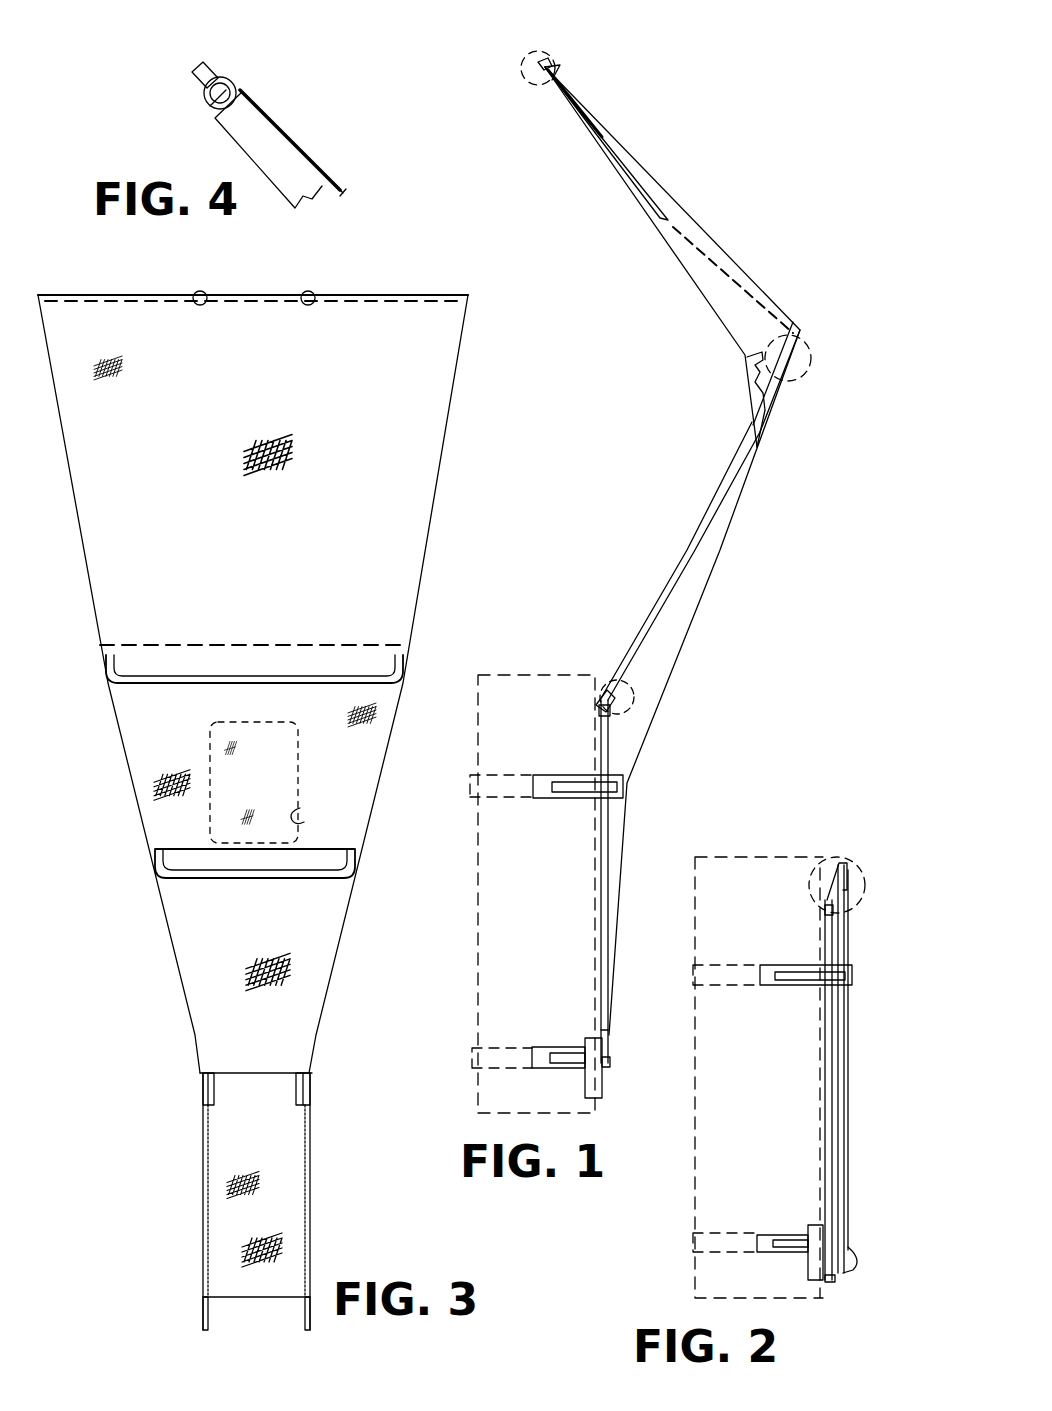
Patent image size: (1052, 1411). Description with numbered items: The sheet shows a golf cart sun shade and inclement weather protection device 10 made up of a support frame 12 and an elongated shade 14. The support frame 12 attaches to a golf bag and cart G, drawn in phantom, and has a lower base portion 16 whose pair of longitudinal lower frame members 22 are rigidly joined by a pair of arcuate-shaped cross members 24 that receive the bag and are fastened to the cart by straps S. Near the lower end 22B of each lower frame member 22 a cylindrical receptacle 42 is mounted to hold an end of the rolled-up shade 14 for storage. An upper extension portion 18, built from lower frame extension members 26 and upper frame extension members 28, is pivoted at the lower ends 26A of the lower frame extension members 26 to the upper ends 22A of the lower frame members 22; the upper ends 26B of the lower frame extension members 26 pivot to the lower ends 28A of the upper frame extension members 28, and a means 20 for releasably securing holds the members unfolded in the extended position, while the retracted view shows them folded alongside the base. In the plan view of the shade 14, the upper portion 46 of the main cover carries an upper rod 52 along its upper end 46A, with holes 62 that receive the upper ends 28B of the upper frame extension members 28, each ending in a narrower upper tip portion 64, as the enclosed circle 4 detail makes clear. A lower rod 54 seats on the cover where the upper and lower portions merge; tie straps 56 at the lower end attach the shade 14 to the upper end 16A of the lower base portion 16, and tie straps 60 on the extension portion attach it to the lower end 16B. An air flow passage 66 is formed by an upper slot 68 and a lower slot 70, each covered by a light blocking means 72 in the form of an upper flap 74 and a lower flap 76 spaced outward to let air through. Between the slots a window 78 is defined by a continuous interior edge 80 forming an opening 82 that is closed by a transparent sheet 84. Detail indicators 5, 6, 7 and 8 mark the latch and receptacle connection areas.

In FIG. 1, the golf cart sun shade and inclement weather protection device 10 is at (745, 100).
In FIG. 1, the support frame 12 is at (698, 697).
In FIG. 2, the support frame 12 is at (832, 1079).
In FIG. 3, the elongated shade 14 is at (483, 472).
In FIG. 4, the elongated shade 14 is at (349, 190).
In FIG. 1, the elongated shade 14 is at (660, 517).
In FIG. 1, the lower base portion 16 is at (619, 882).
In FIG. 1, the upper end of lower base portion 16A is at (600, 707).
In FIG. 1, the lower end of lower base portion 16B is at (611, 1054).
In FIG. 1, the upper extension portion 18 is at (685, 528).
In FIG. 2, the upper extension portion 18 is at (838, 1069).
In FIG. 1, the means for releasably securing 20 is at (811, 343).
In FIG. 2, the means for releasably securing 20 is at (855, 867).
In FIG. 1, the lower frame members 22 is at (602, 965).
In FIG. 2, the lower frame members 22 is at (825, 1060).
In FIG. 1, the upper ends of lower frame members 22A is at (609, 720).
In FIG. 2, the upper ends of lower frame members 22A is at (827, 913).
In FIG. 1, the lower end of lower frame member 22B is at (610, 1030).
In FIG. 2, the lower end of lower frame member 22B is at (832, 1282).
In FIG. 1, the arcuate-shaped cross members 24 is at (570, 798).
In FIG. 2, the arcuate-shaped cross members 24 is at (792, 986).
In FIG. 1, the lower frame extension members 26 is at (678, 582).
In FIG. 2, the lower frame extension members 26 is at (844, 1168).
In FIG. 1, the lower ends of lower frame extension members 26A is at (631, 677).
In FIG. 1, the upper ends of lower frame extension members 26B is at (788, 373).
In FIG. 1, the upper frame extension members 28 is at (686, 200).
In FIG. 2, the upper frame extension members 28 is at (836, 1133).
In FIG. 1, the lower ends of upper frame extension members 28A is at (763, 330).
In FIG. 4, the upper ends of upper frame extension members 28B is at (268, 137).
In FIG. 1, the upper ends of upper frame extension members 28B is at (538, 80).
In FIG. 1, the cylindrical receptacles 42 is at (599, 1086).
In FIG. 2, the cylindrical receptacles 42 is at (808, 1265).
In FIG. 4, the upper portion of main cover 46 is at (341, 188).
In FIG. 4, the upper end of upper portion 46A is at (243, 92).
In FIG. 3, the upper rod 52 is at (375, 295).
In FIG. 4, the upper rod 52 is at (210, 109).
In FIG. 3, the lower rod 54 is at (270, 645).
In FIG. 1, the lower rod 54 is at (768, 333).
In FIG. 3, the tie straps 56 is at (201, 1097).
In FIG. 3, the tie straps 60 is at (300, 1315).
In FIG. 3, the holes 62 is at (307, 293).
In FIG. 4, the holes 62 is at (204, 96).
In FIG. 4, the upper tip portion 64 is at (204, 71).
In FIG. 1, the upper tip portion 64 is at (548, 64).
In FIG. 3, the air flow passage 66 is at (382, 690).
In FIG. 3, the upper slot 68 is at (108, 678).
In FIG. 3, the lower slot 70 is at (173, 873).
In FIG. 3, the light blocking means 72 is at (136, 690).
In FIG. 3, the upper flap 74 is at (166, 660).
In FIG. 3, the lower flap 76 is at (227, 862).
In FIG. 3, the window 78 is at (305, 755).
In FIG. 3, the continuous interior edge 80 is at (208, 803).
In FIG. 3, the opening 82 is at (306, 820).
In FIG. 3, the sheet 84 is at (246, 782).
In FIG. 1, the circle 4 is at (562, 67).
In FIG. 1, the section detail 5 is at (793, 337).
In FIG. 1, the section detail 6 is at (608, 680).
In FIG. 2, the section detail 7 is at (843, 860).
In FIG. 2, the section detail 8 is at (848, 1257).
In FIG. 1, the golf bag and cart G is at (477, 926).
In FIG. 1, the straps S is at (492, 800).
In FIG. 2, the straps S is at (716, 988).